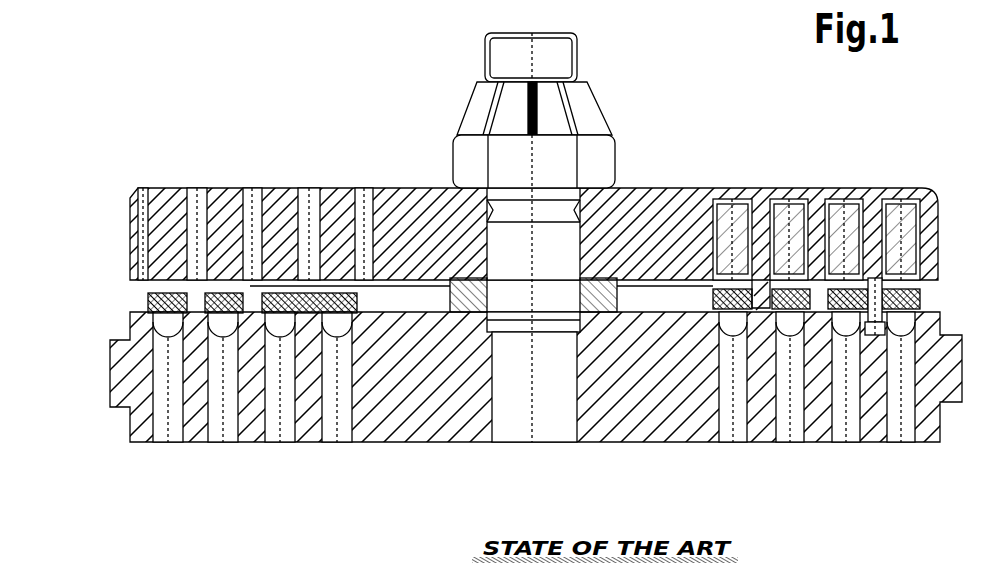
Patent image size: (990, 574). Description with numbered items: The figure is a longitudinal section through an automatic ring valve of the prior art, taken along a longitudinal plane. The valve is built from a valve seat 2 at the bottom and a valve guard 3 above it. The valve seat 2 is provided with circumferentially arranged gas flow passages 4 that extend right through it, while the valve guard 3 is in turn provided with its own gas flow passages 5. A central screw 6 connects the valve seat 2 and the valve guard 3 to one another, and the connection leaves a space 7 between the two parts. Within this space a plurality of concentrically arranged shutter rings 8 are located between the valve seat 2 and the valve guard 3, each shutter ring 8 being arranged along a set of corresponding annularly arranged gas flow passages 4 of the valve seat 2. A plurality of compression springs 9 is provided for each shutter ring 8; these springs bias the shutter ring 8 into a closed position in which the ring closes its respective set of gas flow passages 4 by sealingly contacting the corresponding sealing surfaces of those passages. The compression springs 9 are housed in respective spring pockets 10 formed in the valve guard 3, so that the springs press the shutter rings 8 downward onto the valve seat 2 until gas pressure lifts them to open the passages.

The valve seat 2 is at (136, 432).
The valve guard 3 is at (160, 200).
The gas flow passages 4 is at (330, 442).
The gas flow passages 5 is at (300, 190).
The central screw 6 is at (578, 70).
The space 7 is at (420, 287).
The shutter rings 8 is at (150, 300).
The compression springs 9 is at (790, 197).
The spring pockets 10 is at (735, 197).